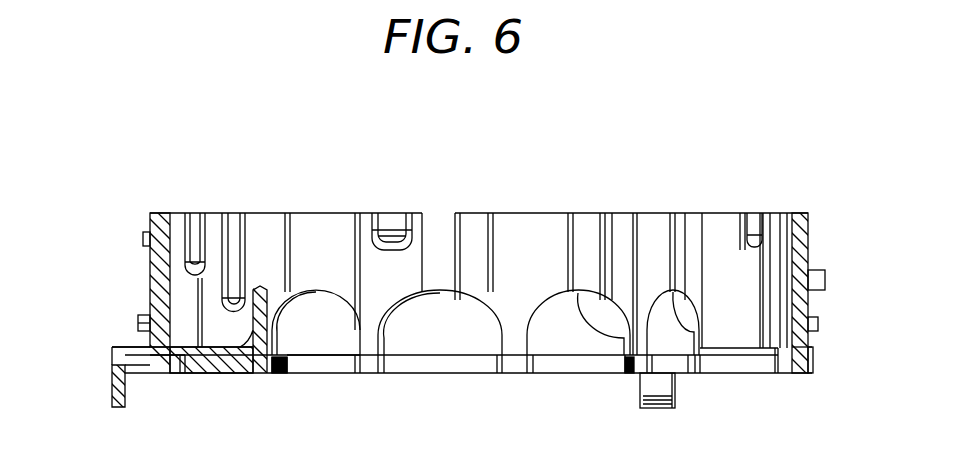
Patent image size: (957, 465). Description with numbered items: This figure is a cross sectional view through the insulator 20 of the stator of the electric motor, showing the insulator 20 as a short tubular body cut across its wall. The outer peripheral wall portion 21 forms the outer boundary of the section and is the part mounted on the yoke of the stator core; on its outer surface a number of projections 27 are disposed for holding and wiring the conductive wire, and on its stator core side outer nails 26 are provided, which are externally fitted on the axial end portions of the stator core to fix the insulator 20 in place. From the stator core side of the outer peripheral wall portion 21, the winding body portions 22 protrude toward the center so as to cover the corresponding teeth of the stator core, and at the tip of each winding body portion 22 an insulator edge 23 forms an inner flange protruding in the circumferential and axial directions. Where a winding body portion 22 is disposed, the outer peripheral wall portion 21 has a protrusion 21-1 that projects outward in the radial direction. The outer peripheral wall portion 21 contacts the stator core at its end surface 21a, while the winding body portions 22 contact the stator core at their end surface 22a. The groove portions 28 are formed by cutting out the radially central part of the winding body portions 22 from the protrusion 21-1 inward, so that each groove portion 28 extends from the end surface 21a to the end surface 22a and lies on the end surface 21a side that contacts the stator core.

The insulator 20 is at (352, 160).
The outer peripheral wall portion 21 is at (532, 213).
The protrusion 21-1 is at (125, 348).
The end surface 21a is at (805, 374).
The winding body portion 22 is at (208, 374).
The end surface 22a is at (255, 374).
The insulator edge 23 is at (300, 374).
The outer nail 26 is at (117, 407).
The projection 27 is at (138, 320).
The groove portion 28 is at (167, 374).